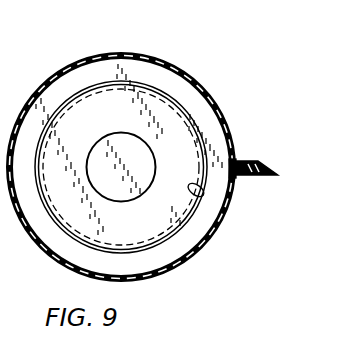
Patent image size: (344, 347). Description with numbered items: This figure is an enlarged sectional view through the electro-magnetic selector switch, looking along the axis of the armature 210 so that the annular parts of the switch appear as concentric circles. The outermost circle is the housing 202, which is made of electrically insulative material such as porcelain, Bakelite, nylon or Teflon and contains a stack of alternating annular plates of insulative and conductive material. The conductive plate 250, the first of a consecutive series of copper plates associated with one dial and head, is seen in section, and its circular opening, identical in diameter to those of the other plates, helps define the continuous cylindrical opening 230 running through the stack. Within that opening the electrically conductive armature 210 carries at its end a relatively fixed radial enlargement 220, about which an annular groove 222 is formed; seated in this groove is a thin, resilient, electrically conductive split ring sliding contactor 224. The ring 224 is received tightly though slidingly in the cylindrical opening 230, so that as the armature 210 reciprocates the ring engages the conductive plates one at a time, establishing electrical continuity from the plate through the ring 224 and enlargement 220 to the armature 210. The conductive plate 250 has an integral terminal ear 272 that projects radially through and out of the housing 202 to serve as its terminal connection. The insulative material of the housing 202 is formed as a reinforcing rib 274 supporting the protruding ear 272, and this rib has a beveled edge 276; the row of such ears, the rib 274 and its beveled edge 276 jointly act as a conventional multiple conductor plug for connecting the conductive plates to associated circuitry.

The housing 202 is at (166, 63).
The armature 210 is at (146, 155).
The radial enlargement 220 is at (186, 164).
The annular groove 222 is at (147, 95).
The split ring sliding contactor 224 is at (170, 95).
The cylindrical opening 230 is at (203, 200).
The conductive annular plate 250 is at (200, 247).
The terminal ear 272 is at (233, 162).
The reinforcing rib 274 is at (249, 178).
The beveled edge 276 is at (272, 170).